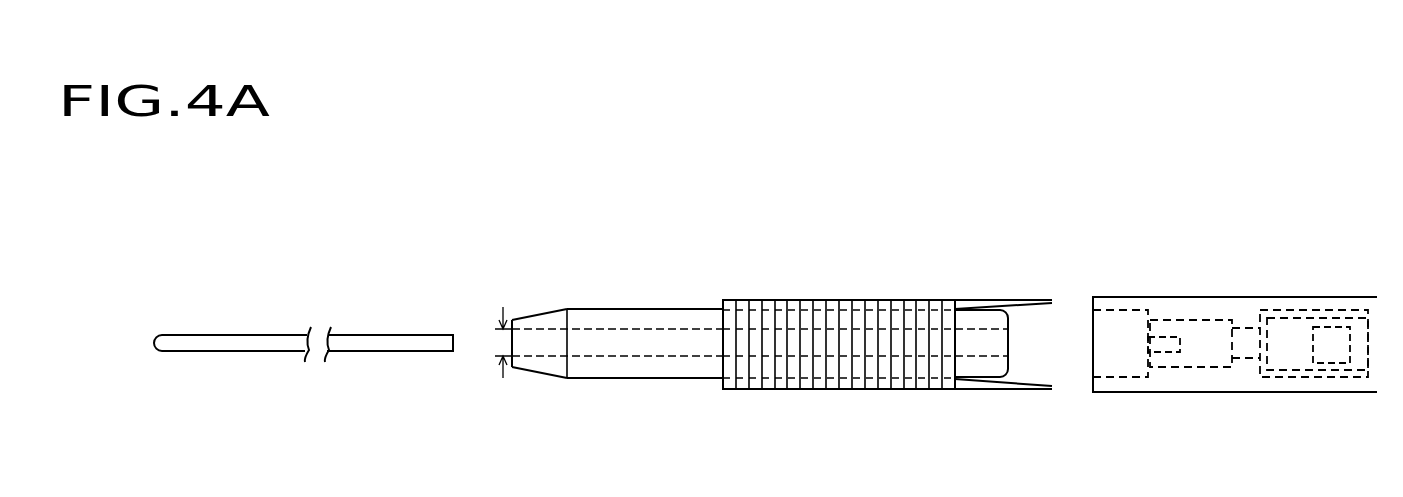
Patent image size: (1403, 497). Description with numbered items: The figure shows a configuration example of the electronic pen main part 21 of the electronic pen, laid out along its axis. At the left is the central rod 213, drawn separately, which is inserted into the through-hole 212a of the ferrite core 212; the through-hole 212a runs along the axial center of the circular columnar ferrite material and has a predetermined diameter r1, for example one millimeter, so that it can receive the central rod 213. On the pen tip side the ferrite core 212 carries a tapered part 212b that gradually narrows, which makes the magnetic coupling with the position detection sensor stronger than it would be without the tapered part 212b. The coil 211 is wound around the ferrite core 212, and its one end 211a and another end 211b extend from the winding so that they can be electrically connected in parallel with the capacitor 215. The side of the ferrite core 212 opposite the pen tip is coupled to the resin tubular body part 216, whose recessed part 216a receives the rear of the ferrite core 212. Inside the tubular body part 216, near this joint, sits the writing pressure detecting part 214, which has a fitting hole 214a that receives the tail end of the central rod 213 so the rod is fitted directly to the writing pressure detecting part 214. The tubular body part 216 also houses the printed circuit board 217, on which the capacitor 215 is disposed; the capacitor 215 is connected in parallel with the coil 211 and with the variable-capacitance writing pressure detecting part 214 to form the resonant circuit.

The electronic pen main part 21 is at (814, 258).
The coil 211 is at (827, 390).
The one end of the coil 211a is at (1040, 298).
The another end of the coil 211b is at (1040, 392).
The ferrite core 212 is at (642, 308).
The through-hole 212a is at (645, 345).
The tapered part 212b is at (543, 373).
The central rod 213 is at (277, 338).
The writing pressure detecting part 214 is at (1202, 333).
The fitting hole 214a is at (1165, 345).
The capacitor 215 is at (1332, 355).
The tubular body part 216 is at (1248, 310).
The recessed part 216a is at (1118, 330).
The printed circuit board 217 is at (1283, 355).
The predetermined diameter r1 is at (498, 342).